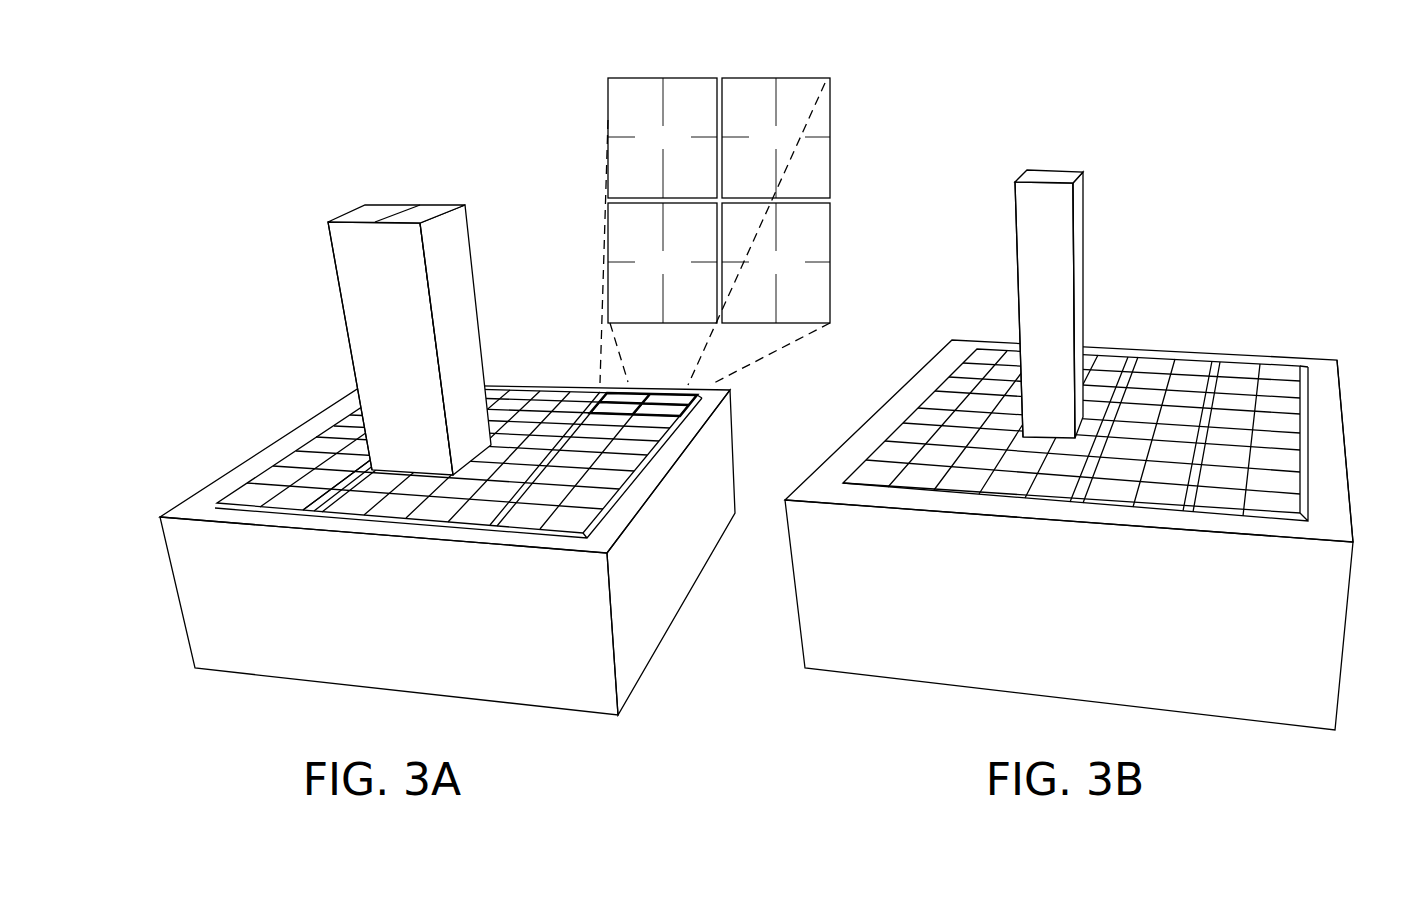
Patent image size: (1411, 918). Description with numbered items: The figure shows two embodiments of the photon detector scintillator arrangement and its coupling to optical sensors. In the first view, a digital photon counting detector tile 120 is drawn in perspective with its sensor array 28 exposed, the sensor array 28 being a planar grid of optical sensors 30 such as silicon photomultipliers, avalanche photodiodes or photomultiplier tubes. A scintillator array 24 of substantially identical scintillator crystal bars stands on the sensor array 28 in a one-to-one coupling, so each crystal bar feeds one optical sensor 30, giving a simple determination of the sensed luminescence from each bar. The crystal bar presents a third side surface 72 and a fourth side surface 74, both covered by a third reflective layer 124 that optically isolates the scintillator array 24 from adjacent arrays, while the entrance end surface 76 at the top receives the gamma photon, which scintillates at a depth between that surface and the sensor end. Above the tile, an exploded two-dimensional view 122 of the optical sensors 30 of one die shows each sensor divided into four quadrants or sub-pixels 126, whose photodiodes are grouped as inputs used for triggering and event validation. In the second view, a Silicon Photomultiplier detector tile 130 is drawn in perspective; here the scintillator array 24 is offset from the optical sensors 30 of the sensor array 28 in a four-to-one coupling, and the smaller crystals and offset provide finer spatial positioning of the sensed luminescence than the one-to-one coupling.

In FIG. 3A, the scintillator array 24 is at (386, 317).
In FIG. 3B, the scintillator array 24 is at (1007, 304).
In FIG. 3A, the sensor array 28 is at (458, 482).
In FIG. 3B, the sensor array 28 is at (1073, 452).
In FIG. 3A, the optical sensor 30 is at (450, 535).
In FIG. 3B, the optical sensor 30 is at (1055, 483).
In FIG. 3A, the third side surface 72 is at (358, 303).
In FIG. 3A, the fourth side surface 74 is at (450, 247).
In FIG. 3A, the entrance end surface 76 is at (435, 207).
In FIG. 3A, the digital photon counting detector tile 120 is at (232, 478).
In FIG. 3A, the exploded two-dimensional view 122 is at (716, 213).
In FIG. 3A, the third reflective layer 124 is at (344, 348).
In FIG. 3B, the third reflective layer 124 is at (1010, 305).
In FIG. 3A, the sub-pixel 126 is at (748, 93).
In FIG. 3B, the Silicon Photomultiplier (SiPM) detector tile 130 is at (828, 465).